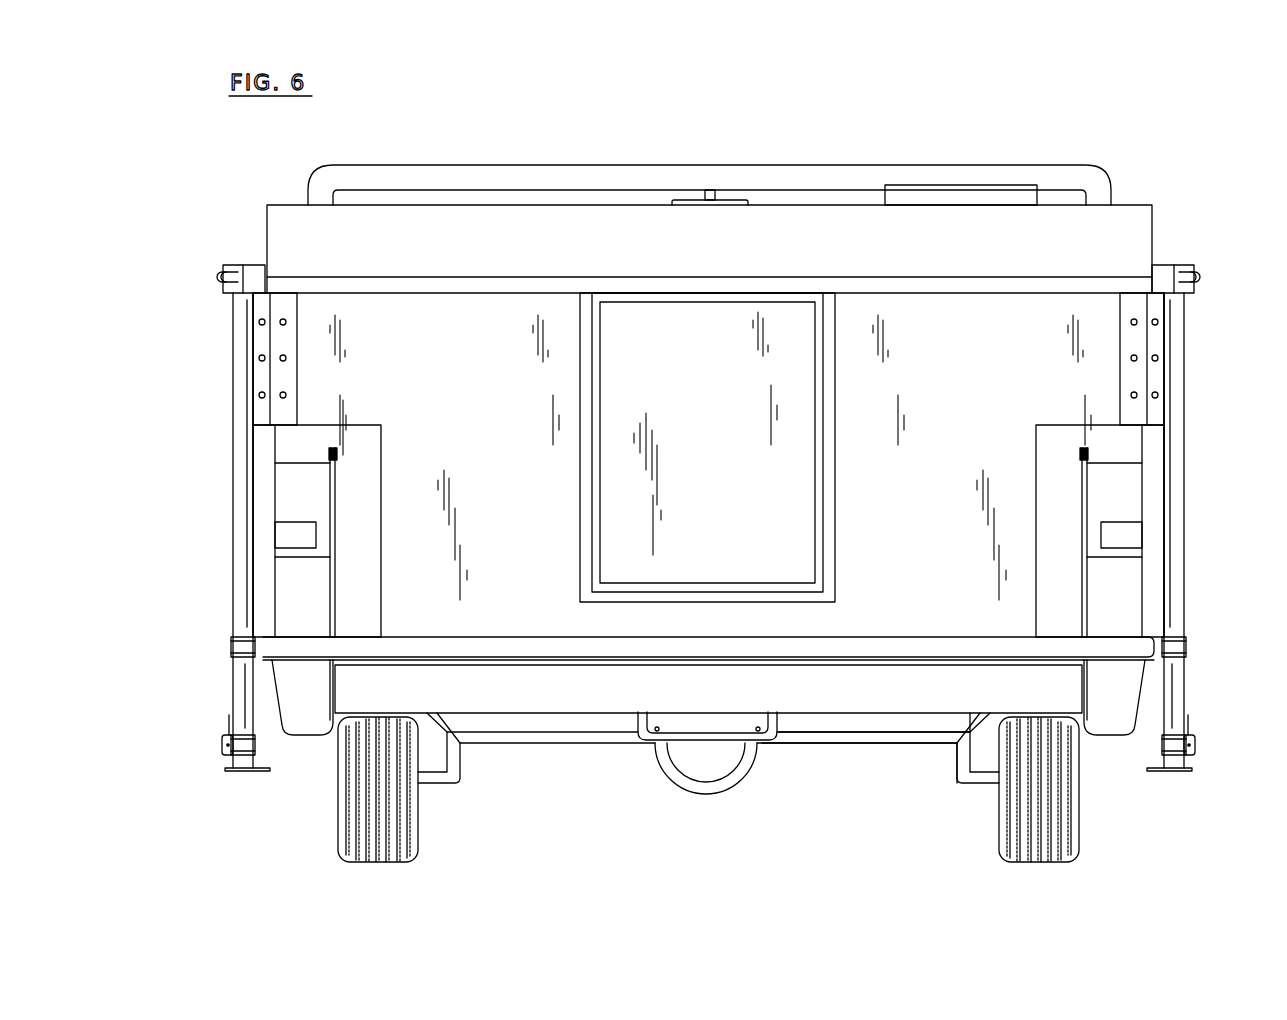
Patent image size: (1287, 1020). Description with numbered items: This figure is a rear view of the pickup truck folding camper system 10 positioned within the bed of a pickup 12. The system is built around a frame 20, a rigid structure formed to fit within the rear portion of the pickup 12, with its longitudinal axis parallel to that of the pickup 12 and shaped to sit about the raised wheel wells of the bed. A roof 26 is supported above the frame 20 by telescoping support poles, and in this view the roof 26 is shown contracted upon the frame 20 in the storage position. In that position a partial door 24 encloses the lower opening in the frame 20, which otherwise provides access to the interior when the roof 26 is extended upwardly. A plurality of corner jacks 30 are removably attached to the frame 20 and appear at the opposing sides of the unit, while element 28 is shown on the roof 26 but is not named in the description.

The pickup truck folding camper system 10 is at (1147, 117).
The pickup 12 is at (630, 165).
The frame 20 is at (437, 327).
The partial door 24 is at (788, 562).
The roof 26 is at (787, 233).
The box latch 28 is at (940, 192).
The corner jacks 30 is at (233, 432).